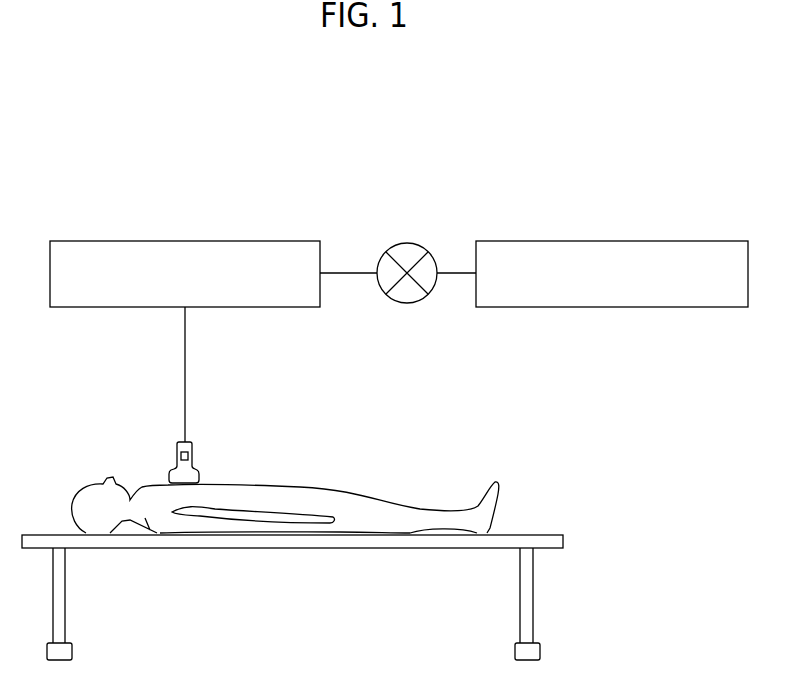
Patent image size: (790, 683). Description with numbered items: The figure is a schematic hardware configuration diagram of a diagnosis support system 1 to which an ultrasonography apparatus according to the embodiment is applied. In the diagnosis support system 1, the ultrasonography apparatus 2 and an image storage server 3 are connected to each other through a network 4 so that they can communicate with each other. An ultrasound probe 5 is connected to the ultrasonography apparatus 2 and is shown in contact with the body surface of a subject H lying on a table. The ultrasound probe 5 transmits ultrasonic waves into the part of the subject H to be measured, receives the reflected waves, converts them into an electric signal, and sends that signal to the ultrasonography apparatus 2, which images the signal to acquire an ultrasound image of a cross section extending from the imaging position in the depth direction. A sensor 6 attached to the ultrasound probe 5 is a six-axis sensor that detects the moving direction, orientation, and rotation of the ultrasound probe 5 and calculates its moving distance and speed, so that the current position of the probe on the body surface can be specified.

The diagnosis support system 1 is at (535, 125).
The ultrasonography apparatus 2 is at (185, 241).
The image storage server 3 is at (612, 241).
The network 4 is at (407, 242).
The ultrasound probe 5 is at (178, 442).
The sensor 6 is at (180, 452).
The subject H is at (254, 491).